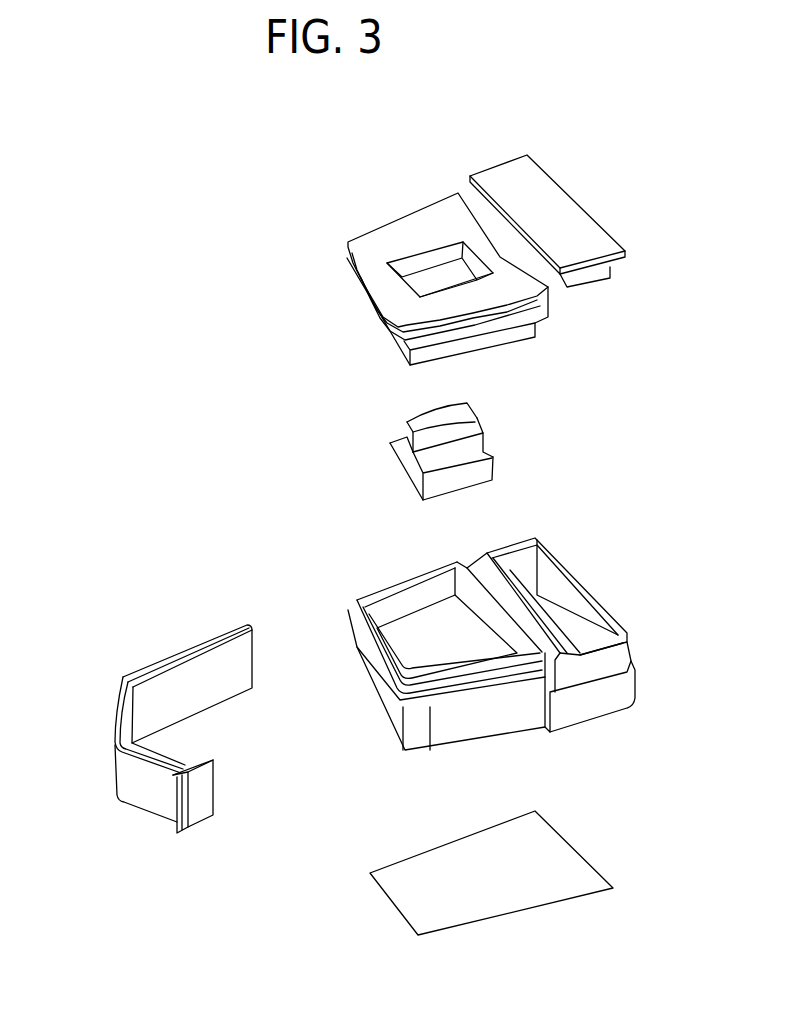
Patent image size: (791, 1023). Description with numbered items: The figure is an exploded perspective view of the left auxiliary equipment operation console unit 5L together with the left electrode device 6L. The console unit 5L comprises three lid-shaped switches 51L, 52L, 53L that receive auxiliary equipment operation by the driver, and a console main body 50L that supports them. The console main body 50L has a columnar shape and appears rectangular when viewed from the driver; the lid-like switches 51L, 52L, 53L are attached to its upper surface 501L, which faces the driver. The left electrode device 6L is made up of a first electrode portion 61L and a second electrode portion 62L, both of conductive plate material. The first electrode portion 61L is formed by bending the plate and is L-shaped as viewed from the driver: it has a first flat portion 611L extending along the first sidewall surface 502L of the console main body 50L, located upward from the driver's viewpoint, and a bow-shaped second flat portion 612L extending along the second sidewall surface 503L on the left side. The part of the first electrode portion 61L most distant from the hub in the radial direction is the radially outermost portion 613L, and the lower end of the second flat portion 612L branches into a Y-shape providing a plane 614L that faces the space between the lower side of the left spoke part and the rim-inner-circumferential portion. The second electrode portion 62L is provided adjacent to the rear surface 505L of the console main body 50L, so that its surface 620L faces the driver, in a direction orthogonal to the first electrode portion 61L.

The left auxiliary equipment operation console unit 5L is at (635, 183).
The lid-shaped switch 51L is at (535, 163).
The lid-shaped switch 52L is at (405, 225).
The lid-shaped switch 53L is at (398, 461).
The console main body 50L is at (638, 557).
The upper surface 501L is at (560, 513).
The first sidewall surface 502L is at (383, 588).
The second sidewall surface 503L is at (377, 698).
The rear surface 505L is at (513, 733).
The left electrode device 6L is at (88, 880).
The first electrode portion 61L is at (148, 849).
The first flat portion 611L is at (203, 650).
The second flat portion 612L is at (118, 726).
The radially outermost portion 613L is at (117, 773).
The plane 614L is at (205, 797).
The second electrode portion 62L is at (425, 908).
The surface 620L is at (580, 870).